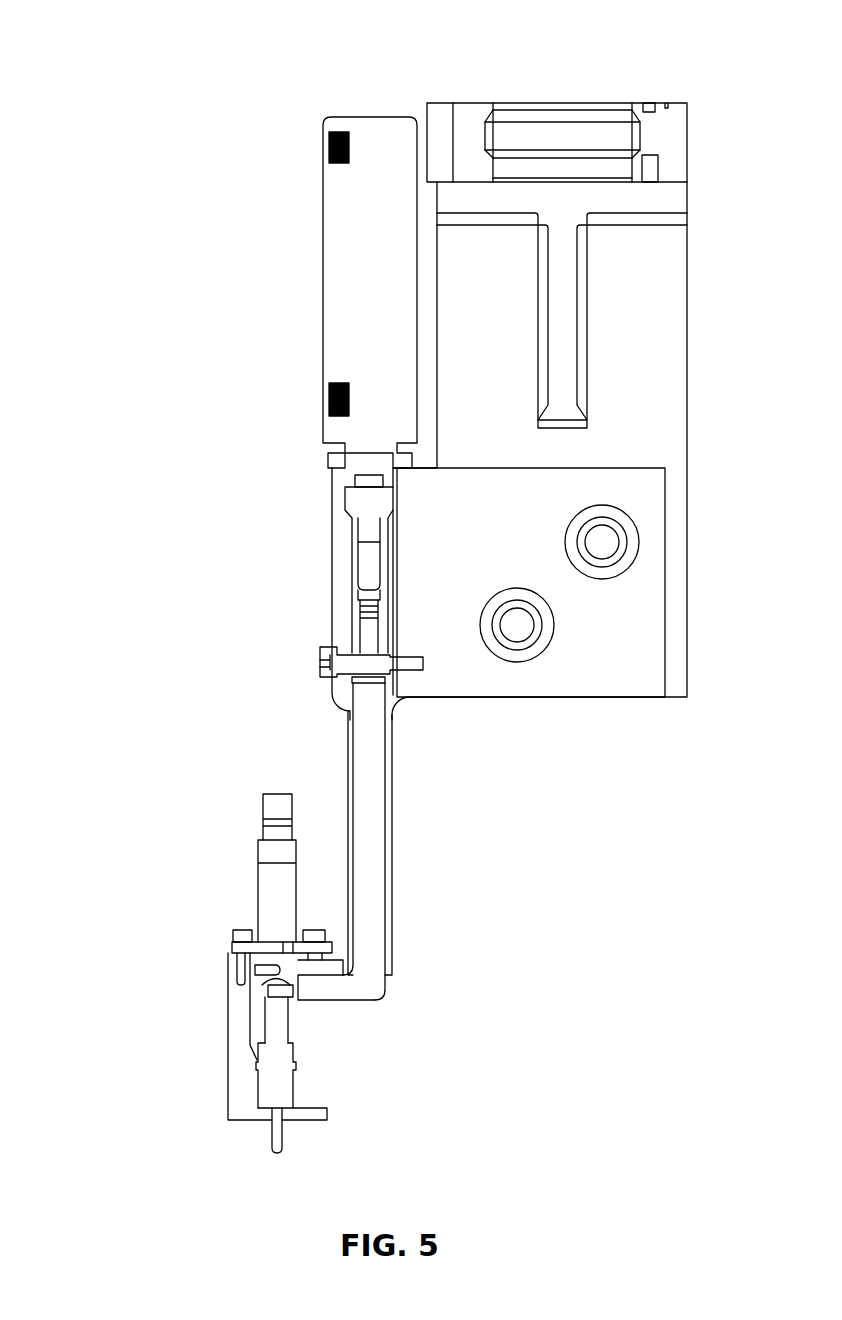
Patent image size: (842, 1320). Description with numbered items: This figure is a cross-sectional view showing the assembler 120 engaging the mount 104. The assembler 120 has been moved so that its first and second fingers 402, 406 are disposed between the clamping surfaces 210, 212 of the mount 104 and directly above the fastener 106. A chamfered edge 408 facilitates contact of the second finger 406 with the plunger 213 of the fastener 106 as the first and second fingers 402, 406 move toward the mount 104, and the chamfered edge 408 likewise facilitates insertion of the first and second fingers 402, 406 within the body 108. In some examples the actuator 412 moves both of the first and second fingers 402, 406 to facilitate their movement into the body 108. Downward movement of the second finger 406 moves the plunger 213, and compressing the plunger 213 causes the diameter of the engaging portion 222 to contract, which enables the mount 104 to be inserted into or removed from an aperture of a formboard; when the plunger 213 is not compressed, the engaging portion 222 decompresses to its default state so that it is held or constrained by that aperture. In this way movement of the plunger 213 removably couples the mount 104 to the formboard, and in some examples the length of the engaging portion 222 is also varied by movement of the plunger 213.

The assembler 120 is at (692, 58).
The actuator 412 is at (335, 288).
The second finger 406 is at (367, 995).
The first finger 402 is at (338, 963).
The mount 104 is at (113, 870).
The clamping surface 210 is at (273, 967).
The chamfered edge 408 is at (273, 986).
The plunger 213 is at (278, 1030).
The body 108 is at (236, 1092).
The fastener 106 is at (283, 1083).
The clamping surface 212 is at (312, 1108).
The engaging portion 222 is at (283, 1137).